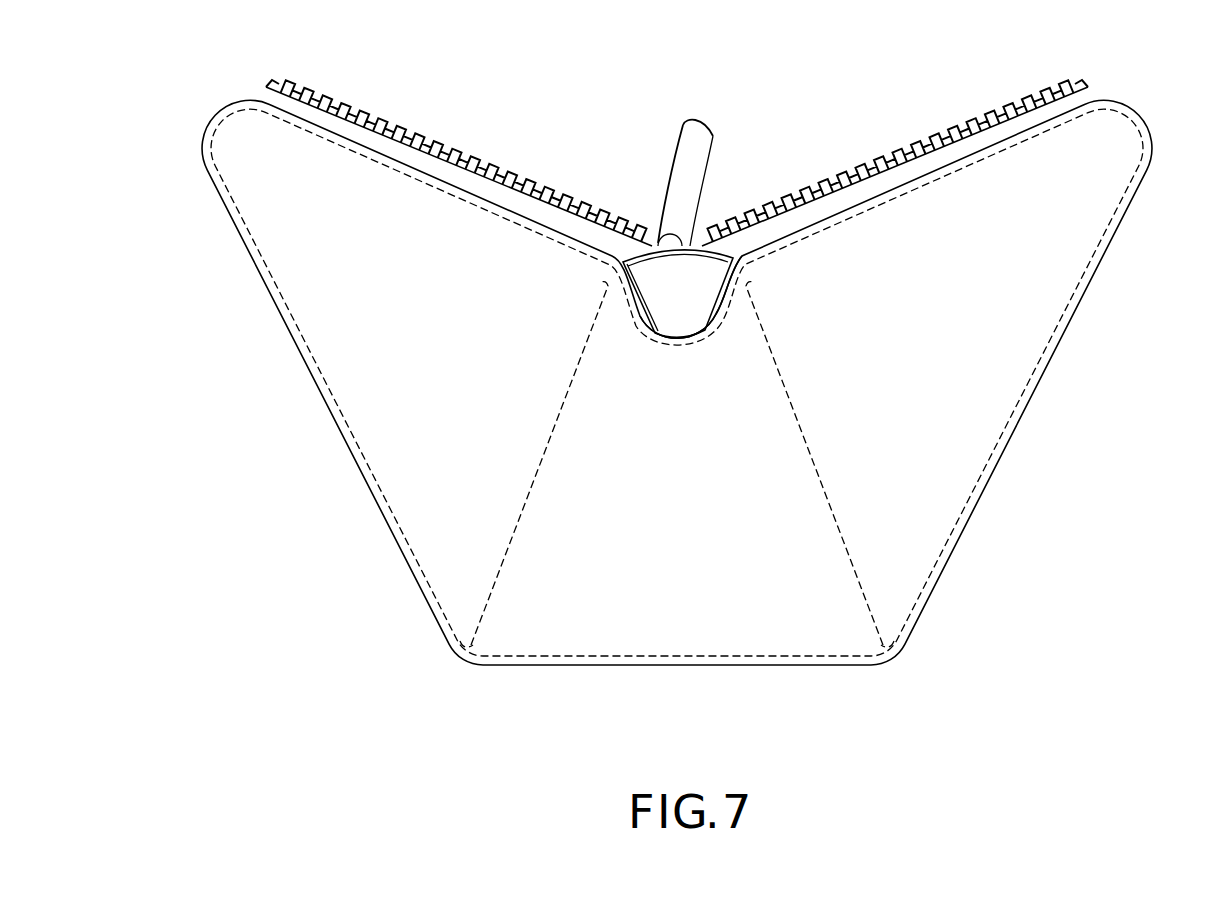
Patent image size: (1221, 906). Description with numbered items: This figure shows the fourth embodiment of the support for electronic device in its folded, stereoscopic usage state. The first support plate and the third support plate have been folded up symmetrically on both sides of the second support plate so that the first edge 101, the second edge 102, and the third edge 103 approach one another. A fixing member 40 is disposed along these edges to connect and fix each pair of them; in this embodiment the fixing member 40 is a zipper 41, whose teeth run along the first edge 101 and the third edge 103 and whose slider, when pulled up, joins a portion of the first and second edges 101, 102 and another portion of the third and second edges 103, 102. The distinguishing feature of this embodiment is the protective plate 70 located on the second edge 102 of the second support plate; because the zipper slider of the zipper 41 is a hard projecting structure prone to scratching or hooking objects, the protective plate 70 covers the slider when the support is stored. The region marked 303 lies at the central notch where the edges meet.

The first edge 101 is at (467, 190).
The third edge 103 is at (967, 156).
The protective plate 70 is at (690, 278).
The fixing member 40 is at (644, 210).
The zipper 41 is at (660, 244).
The bottom of notch 303 is at (676, 352).
The second edge 102 is at (712, 335).